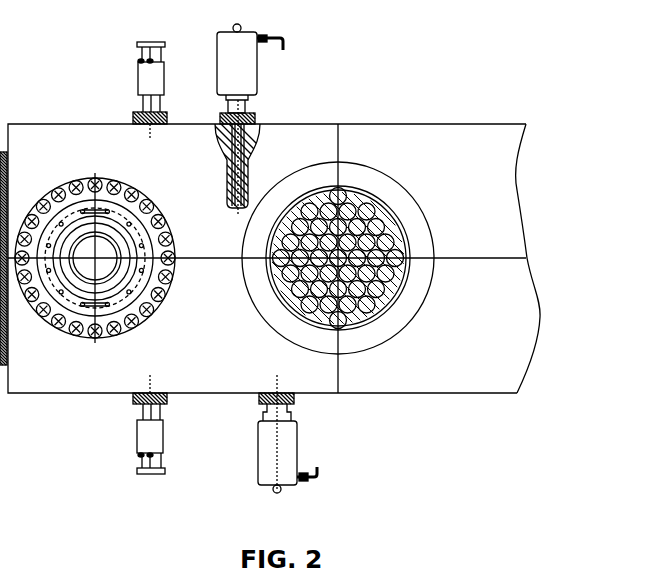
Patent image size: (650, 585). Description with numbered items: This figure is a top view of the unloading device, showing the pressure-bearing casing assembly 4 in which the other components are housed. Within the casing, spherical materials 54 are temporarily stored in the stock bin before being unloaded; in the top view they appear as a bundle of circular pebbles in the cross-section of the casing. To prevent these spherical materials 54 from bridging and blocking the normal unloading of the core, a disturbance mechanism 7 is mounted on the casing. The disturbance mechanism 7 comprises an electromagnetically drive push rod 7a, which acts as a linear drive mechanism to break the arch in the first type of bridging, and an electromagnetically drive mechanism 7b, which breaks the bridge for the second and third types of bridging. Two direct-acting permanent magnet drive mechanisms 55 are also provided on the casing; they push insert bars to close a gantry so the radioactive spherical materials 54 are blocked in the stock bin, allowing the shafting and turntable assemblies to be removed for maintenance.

The pressure-bearing casing assembly 4 is at (282, 163).
The spherical materials 54 is at (407, 285).
The direct-acting permanent magnet drive mechanism 55 is at (145, 88).
The disturbance mechanism 7 is at (256, 446).
The electromagnetically drive push rod 7a is at (283, 472).
The electromagnetically drive mechanism 7b is at (235, 62).